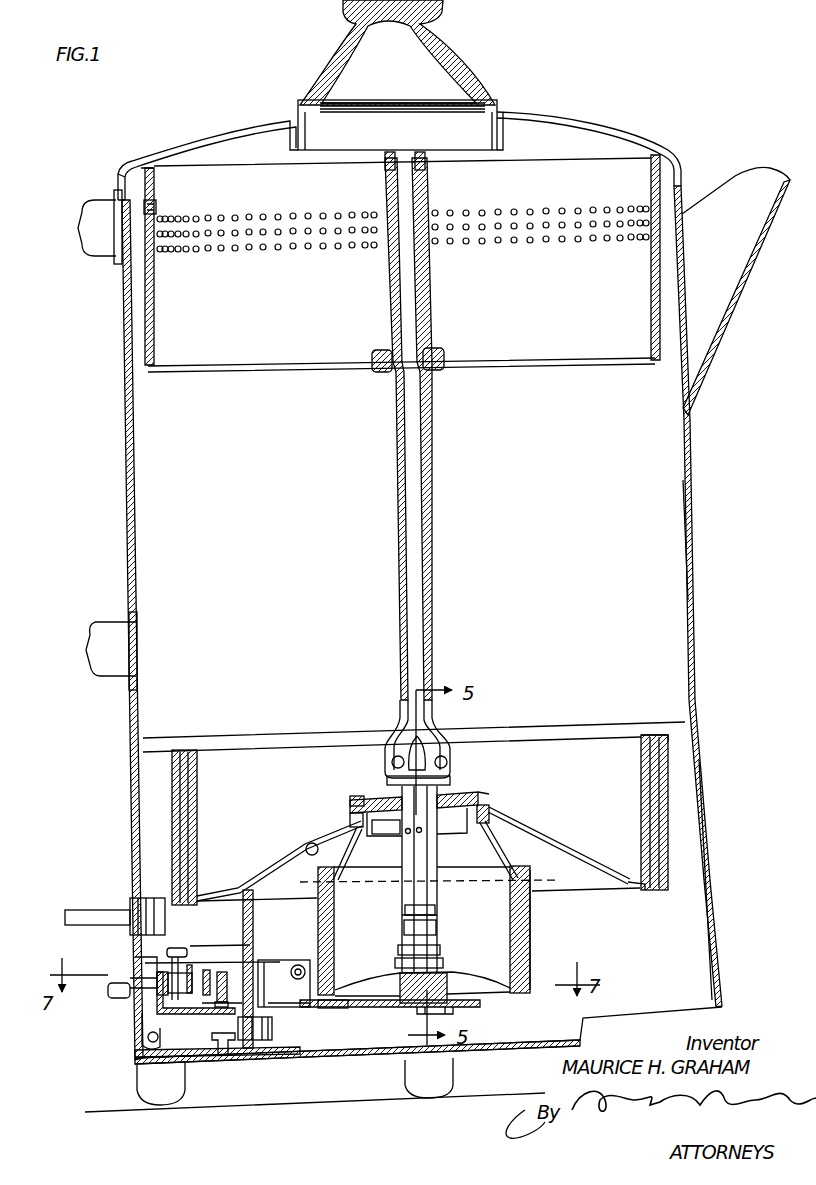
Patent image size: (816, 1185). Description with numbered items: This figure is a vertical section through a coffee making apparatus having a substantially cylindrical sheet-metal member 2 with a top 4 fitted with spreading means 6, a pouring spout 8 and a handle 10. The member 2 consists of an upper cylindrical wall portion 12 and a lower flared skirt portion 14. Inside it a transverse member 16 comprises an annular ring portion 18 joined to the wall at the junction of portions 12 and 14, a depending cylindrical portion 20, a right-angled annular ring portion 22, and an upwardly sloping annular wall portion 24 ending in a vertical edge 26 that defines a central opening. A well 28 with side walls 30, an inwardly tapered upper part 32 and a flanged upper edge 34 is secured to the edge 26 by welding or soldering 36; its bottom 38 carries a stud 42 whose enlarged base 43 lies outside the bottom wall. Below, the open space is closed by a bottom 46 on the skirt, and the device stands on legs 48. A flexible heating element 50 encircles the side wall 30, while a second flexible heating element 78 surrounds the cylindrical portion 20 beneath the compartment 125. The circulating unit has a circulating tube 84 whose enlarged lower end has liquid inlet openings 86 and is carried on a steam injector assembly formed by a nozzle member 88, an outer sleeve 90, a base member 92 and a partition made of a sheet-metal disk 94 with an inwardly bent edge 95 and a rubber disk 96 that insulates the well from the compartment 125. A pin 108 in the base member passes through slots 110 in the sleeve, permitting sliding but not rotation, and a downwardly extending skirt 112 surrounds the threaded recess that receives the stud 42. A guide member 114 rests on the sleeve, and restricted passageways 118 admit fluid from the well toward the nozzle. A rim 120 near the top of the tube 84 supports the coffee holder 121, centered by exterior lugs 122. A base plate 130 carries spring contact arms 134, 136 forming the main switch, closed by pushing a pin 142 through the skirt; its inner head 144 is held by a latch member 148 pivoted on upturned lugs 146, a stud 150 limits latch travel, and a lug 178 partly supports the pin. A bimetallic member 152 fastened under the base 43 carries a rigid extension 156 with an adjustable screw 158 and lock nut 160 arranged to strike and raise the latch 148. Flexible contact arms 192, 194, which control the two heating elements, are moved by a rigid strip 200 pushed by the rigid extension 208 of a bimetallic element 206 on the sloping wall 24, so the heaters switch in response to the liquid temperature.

The cylindrical member 2 is at (118, 178).
The top 4 is at (190, 136).
The spreading means 6 is at (345, 8).
The pouring spout 8 is at (727, 283).
The handle 10 is at (100, 227).
The upper cylindrical wall portion 12 is at (690, 500).
The lower flared wall portion 14 is at (708, 868).
The transverse member 16 is at (642, 790).
The annular ring portion 18 is at (680, 742).
The cylindrically shaped portion 20 is at (640, 758).
The annular ring portion 22 is at (630, 888).
The upwardly sloping annular wall portion 24 is at (580, 862).
The upper vertical edge 26 is at (492, 813).
The well 28 is at (535, 935).
The side walls 30 is at (522, 915).
The tapered upper portion 32 is at (500, 846).
The flanged upper edge 34 is at (354, 801).
The welding or soldering 36 is at (352, 815).
The bottom 38 is at (490, 985).
The stud 42 is at (403, 960).
The enlarged base portion 43 is at (405, 1010).
The bottom 46 is at (320, 1058).
The legs 48 is at (145, 1081).
The flexible heating element 50 is at (535, 958).
The second flexible heating element 78 is at (170, 805).
The circulating tube 84 is at (437, 503).
The liquid inlet openings 86 is at (391, 762).
The nozzle member 88 is at (425, 746).
The outer sleeve 90 is at (405, 912).
The base member 92 is at (410, 932).
The circular disk 94 is at (472, 792).
The inwardly bent edge 95 is at (450, 790).
The rubber disk 96 is at (490, 799).
The transversely mounted pin 108 is at (415, 910).
The slots 110 is at (440, 893).
The downwardly extending skirt 112 is at (403, 950).
The guide member 114 is at (455, 836).
The restricted passageways 118 is at (419, 834).
The rim or shoulder 120 is at (388, 375).
The holder 121 is at (245, 375).
The exterior lugs or pins 122 is at (158, 206).
The compartment 125 is at (660, 603).
The base plate 130 is at (173, 1013).
The contact arm 134 is at (190, 972).
The contact arm 136 is at (202, 1014).
The pin 142 is at (110, 990).
The enlarged head 144 is at (182, 1016).
The upturned lugs 146 is at (290, 1005).
The latch member 148 is at (273, 962).
The stud 150 is at (177, 948).
The bimetallic material 152 is at (383, 1010).
The rigid extension 156 is at (335, 1010).
The adjustable screw 158 is at (236, 965).
The lock nut 160 is at (220, 1056).
The lug 178 is at (138, 960).
The flexible contact arm 192 is at (240, 1046).
The flexible contact arm 194 is at (266, 1046).
The rigid strip 200 is at (256, 1050).
The bimetallic element 206 is at (288, 862).
The rigid extension 208 is at (247, 920).